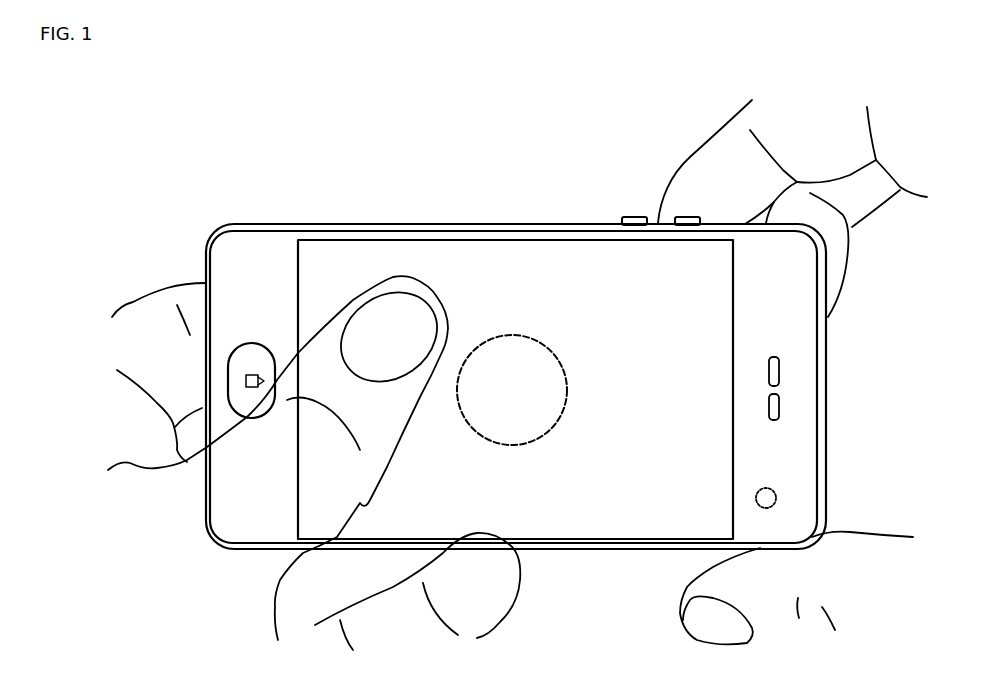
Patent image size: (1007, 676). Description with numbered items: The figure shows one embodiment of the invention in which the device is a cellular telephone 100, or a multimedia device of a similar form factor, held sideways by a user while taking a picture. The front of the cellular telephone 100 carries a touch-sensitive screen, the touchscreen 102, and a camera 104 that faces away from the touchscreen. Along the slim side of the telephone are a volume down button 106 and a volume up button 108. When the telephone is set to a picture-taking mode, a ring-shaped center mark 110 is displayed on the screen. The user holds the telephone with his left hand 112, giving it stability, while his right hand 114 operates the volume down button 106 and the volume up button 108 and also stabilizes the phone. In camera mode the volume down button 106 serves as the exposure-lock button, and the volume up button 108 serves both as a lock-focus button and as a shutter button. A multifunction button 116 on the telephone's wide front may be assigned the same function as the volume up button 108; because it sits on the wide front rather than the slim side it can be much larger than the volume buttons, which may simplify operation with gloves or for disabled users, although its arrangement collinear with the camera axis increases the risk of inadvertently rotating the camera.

The cellular telephone 100 is at (245, 262).
The touchscreen 102 is at (480, 277).
The camera 104 is at (777, 497).
The volume down button 106 is at (635, 212).
The volume up button 108 is at (687, 215).
The center mark 110 is at (547, 445).
The left hand 112 is at (133, 328).
The right hand 114 is at (877, 192).
The multifunction button 116 is at (251, 370).